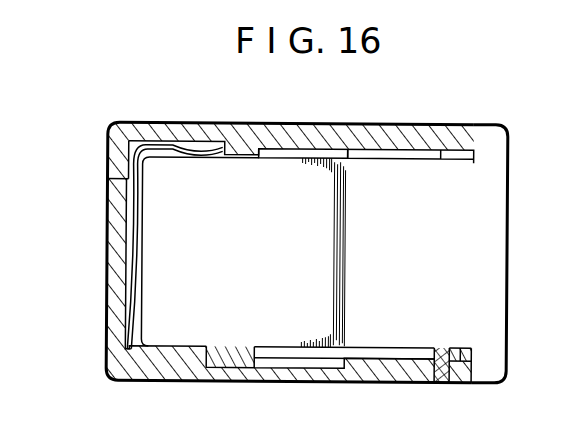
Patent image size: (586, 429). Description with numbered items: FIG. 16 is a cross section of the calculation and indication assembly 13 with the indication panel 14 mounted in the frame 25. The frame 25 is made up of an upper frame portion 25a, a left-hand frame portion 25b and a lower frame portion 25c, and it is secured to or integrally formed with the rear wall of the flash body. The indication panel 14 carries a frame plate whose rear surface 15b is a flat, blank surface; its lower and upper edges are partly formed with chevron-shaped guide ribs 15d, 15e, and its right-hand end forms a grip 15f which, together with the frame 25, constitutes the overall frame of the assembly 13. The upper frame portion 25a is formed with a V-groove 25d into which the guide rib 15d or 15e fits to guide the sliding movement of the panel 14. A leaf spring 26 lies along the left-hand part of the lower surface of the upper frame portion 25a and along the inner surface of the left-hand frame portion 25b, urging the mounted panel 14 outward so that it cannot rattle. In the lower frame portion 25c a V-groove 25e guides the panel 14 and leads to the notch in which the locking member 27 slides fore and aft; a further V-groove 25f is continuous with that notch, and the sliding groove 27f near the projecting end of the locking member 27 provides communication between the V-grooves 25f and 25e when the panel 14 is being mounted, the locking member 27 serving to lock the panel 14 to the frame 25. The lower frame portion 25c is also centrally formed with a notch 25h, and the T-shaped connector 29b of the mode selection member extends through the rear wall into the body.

The calculation and indication assembly 13 is at (433, 110).
The indication panel 14 is at (516, 272).
The rear surface of frame plate 15b is at (156, 268).
The guide rib 15d is at (386, 352).
The guide rib 15e is at (390, 160).
The grip 15f is at (506, 190).
The frame 25 is at (305, 249).
The upper frame portion 25a is at (302, 124).
The left-hand frame portion 25b is at (107, 161).
The lower frame portion 25c is at (176, 368).
The V-groove 25d is at (269, 159).
The V-groove 25e is at (473, 354).
The V-groove 25f is at (440, 352).
The notch 25h is at (325, 364).
The leaf spring 26 is at (140, 232).
The locking member 27 is at (445, 365).
The sliding groove 27f is at (458, 350).
The connector 29b is at (242, 366).